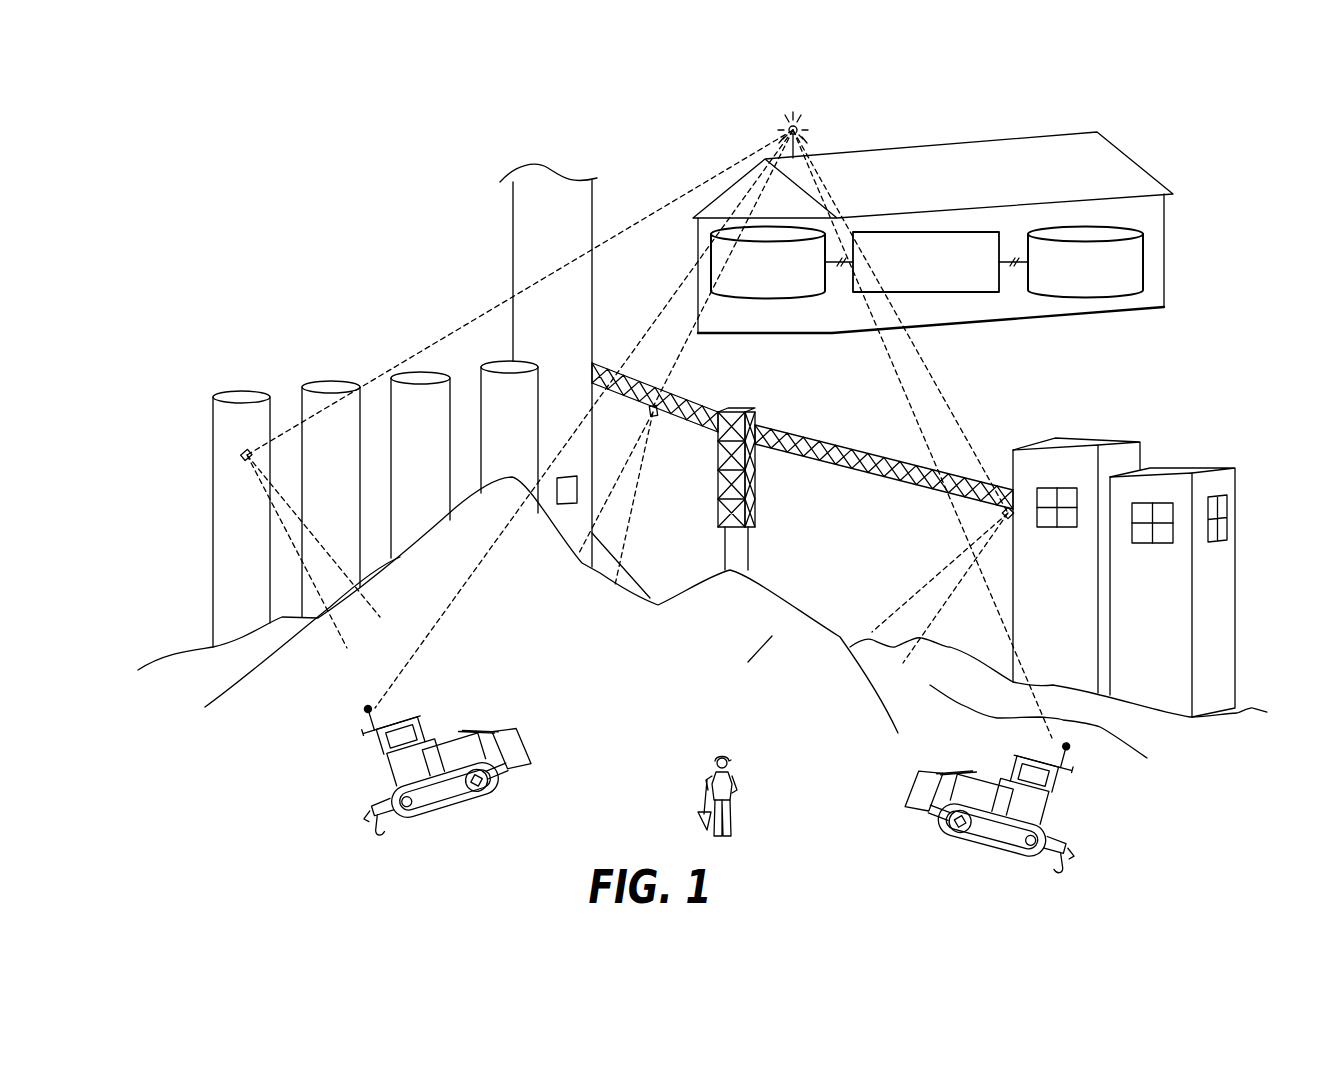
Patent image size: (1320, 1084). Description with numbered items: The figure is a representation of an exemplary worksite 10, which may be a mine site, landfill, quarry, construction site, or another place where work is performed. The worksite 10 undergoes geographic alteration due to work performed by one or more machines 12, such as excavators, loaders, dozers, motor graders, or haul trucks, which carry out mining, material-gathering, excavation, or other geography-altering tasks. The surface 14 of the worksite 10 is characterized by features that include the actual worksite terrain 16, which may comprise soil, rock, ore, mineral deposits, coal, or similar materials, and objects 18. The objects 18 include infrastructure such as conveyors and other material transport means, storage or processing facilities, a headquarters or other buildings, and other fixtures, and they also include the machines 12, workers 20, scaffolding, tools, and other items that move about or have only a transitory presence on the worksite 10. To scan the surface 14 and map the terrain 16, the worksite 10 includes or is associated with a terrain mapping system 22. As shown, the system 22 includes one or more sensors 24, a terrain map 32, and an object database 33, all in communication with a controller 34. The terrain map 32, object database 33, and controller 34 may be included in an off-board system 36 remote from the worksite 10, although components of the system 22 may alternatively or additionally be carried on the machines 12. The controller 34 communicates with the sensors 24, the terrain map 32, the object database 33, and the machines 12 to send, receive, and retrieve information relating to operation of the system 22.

The worksite 10 is at (256, 767).
The machines 12 is at (503, 698).
The surface 14 is at (670, 551).
The terrain 16 is at (965, 680).
The objects 18 is at (503, 274).
The workers 20 is at (710, 765).
The terrain mapping system 22 is at (1215, 279).
The sensors 24 is at (242, 463).
The terrain map 32 is at (775, 298).
The object database 33 is at (1090, 298).
The controller 34 is at (914, 286).
The off-board system 36 is at (1010, 307).